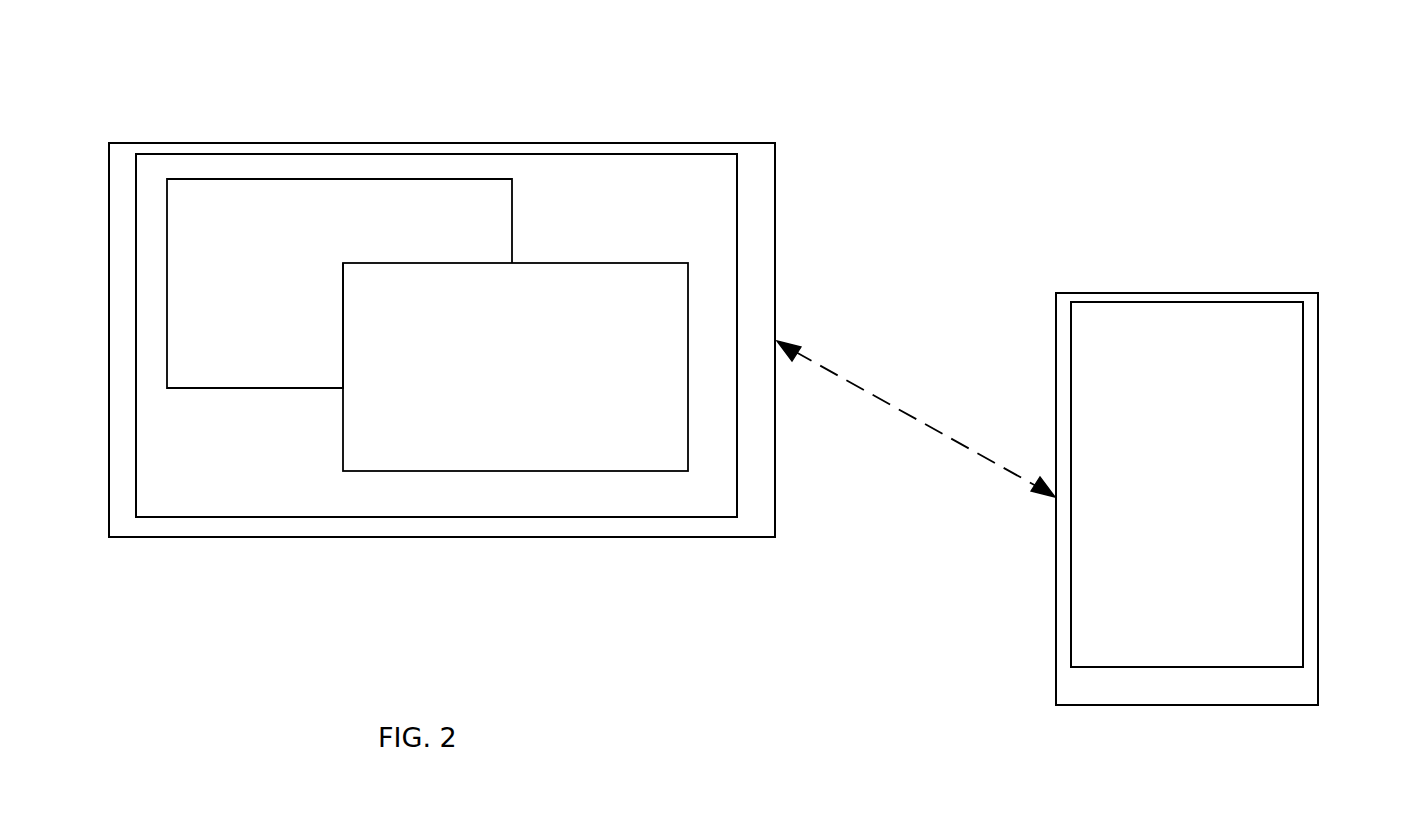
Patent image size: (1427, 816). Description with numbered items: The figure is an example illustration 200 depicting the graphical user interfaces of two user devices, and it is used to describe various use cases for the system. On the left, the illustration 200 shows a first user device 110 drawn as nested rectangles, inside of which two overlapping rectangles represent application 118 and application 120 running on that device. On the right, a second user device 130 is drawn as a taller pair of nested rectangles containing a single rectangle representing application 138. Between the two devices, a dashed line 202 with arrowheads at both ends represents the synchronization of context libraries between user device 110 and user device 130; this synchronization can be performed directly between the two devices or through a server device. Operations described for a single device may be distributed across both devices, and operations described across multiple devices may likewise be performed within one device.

The illustration 200 is at (1212, 128).
The user device 110 is at (775, 178).
The application 118 is at (339, 283).
The application 120 is at (515, 367).
The user device 130 is at (1327, 334).
The application 138 is at (1187, 484).
The dashed line 202 is at (877, 387).